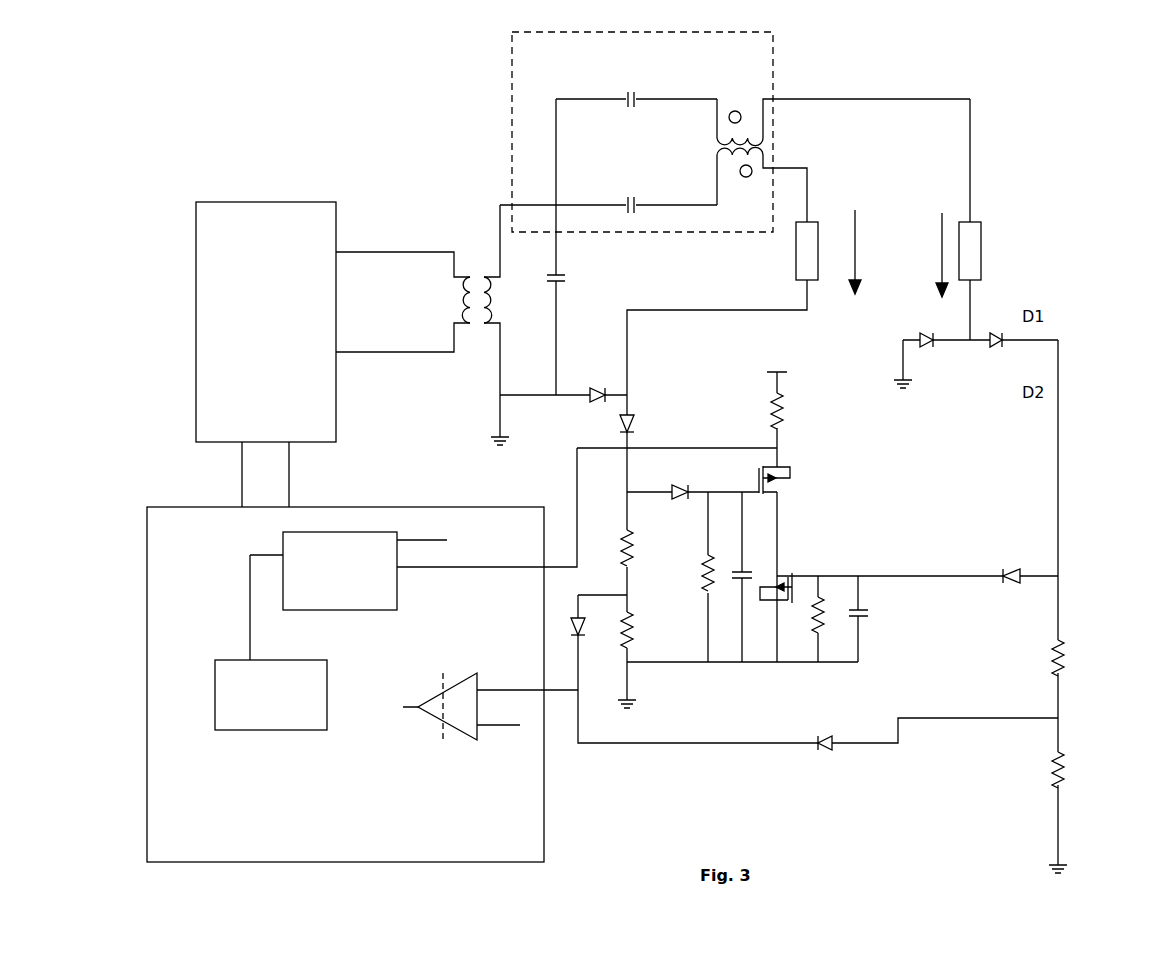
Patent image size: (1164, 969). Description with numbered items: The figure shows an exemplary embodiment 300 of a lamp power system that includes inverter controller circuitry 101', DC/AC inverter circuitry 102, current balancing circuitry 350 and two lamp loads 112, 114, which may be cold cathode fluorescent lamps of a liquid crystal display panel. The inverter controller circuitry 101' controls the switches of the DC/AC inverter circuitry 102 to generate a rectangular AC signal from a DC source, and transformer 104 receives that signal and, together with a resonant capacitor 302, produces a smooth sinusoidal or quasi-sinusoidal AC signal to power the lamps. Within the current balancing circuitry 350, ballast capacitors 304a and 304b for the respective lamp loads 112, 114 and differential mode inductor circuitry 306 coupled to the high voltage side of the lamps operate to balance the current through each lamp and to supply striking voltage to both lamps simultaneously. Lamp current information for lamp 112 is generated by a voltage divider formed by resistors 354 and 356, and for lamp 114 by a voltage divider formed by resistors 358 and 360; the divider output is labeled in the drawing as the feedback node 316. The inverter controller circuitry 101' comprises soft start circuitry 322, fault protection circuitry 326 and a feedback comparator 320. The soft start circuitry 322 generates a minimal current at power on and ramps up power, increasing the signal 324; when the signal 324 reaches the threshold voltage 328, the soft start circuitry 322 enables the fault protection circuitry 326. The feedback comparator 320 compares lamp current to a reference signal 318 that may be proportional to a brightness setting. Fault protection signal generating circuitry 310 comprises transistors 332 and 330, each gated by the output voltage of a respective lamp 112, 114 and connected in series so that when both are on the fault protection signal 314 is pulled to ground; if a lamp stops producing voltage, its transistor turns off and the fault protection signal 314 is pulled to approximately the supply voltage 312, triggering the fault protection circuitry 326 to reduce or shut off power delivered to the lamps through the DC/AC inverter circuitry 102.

The exemplary embodiment 300 is at (239, 114).
The DC/AC inverter circuitry 102 is at (250, 203).
The current balancing circuitry 350 is at (512, 95).
The transformer 104 is at (446, 214).
The differential mode inductor circuitry 306 is at (735, 97).
The ballast capacitor 304b is at (636, 105).
The ballast capacitor 304a is at (608, 183).
The resonant capacitor 302 is at (589, 247).
The lamp load 112 is at (822, 232).
The lamp load 114 is at (1022, 198).
The VDD 312 is at (803, 365).
The transistor 332 is at (803, 493).
The transistor 330 is at (788, 555).
The fault protection signal generating circuitry 310 is at (893, 506).
The fault protection signal FP 314 is at (587, 504).
The feedback node FB 316 is at (694, 669).
The reference signal ADJ 318 is at (503, 748).
The feedback comparator 320 is at (477, 705).
The soft start circuitry 322 is at (282, 737).
The signal VS 324 is at (238, 607).
The fault protection circuitry 326 is at (340, 560).
The threshold voltage VT 328 is at (451, 540).
The inverter controller circuitry 101' is at (345, 658).
The resistor 354 is at (653, 548).
The resistor 356 is at (653, 630).
The resistor 358 is at (1086, 659).
The resistor 360 is at (1087, 770).